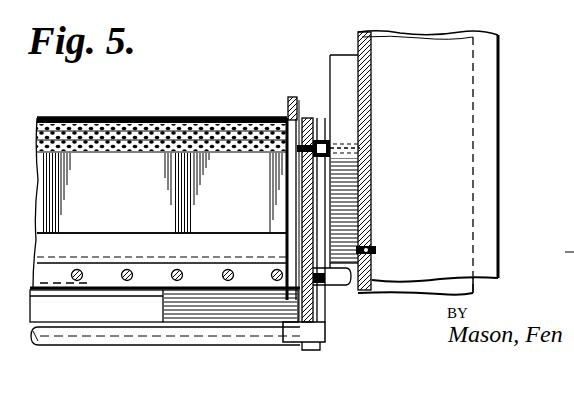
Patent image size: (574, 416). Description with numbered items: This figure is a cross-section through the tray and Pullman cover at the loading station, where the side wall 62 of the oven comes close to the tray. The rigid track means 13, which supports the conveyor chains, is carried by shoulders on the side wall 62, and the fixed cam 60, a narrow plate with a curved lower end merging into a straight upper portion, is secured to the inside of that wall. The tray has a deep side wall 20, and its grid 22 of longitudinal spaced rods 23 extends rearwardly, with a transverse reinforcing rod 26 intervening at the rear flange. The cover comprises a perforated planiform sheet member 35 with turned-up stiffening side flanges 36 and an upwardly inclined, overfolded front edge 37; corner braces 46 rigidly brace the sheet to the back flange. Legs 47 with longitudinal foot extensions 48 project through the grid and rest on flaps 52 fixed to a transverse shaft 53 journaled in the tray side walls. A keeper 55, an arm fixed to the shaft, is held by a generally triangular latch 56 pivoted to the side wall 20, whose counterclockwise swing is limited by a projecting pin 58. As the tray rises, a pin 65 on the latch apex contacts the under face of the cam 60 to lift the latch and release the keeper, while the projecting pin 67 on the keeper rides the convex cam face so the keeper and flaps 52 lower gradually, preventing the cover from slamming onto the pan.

The rigid track means 13 is at (436, 32).
The side wall 20 is at (308, 118).
The grid 22 is at (142, 268).
The longitudinal spaced rods 23 is at (123, 270).
The transverse reinforcing rod 26 is at (57, 286).
The planiform sheet member 35 is at (176, 118).
The stiffening side flanges 36 is at (287, 105).
The front edge 37 is at (263, 10).
The corner braces 46 is at (288, 183).
The legs 47 is at (297, 112).
The foot extensions 48 is at (162, 237).
The flaps 52 is at (170, 309).
The transverse shaft 53 is at (100, 338).
The keeper 55 is at (326, 312).
The latch 56 is at (330, 118).
The projecting pin 58 is at (329, 146).
The fixed cam 60 is at (342, 65).
The side wall 62 is at (369, 121).
The pin 65 is at (370, 148).
The projecting pin 67 is at (344, 285).